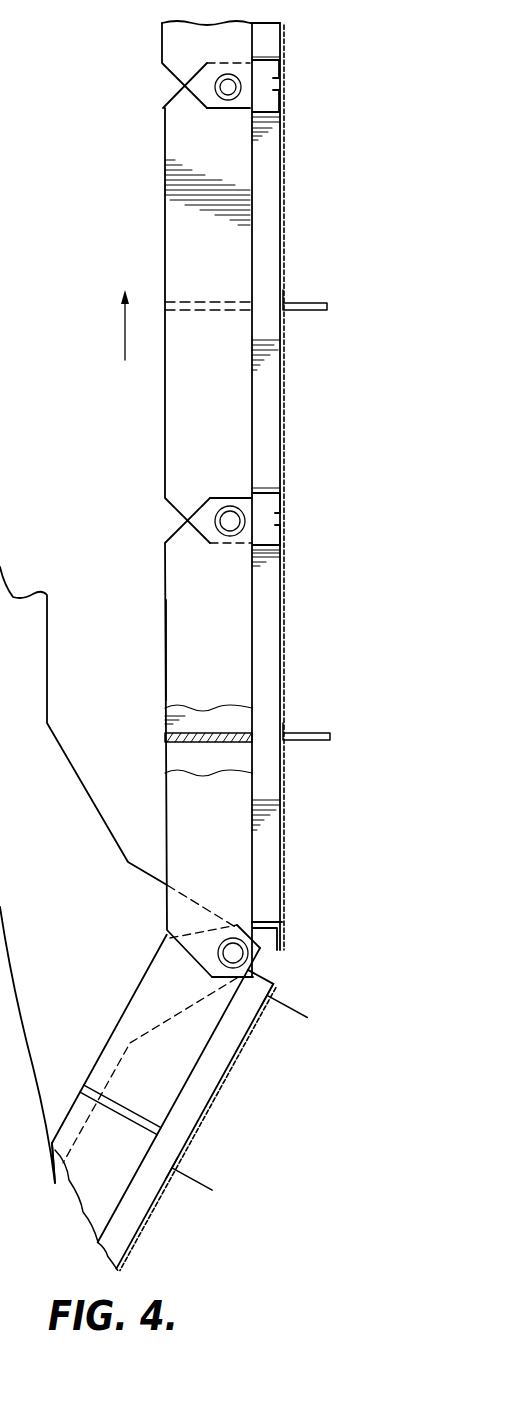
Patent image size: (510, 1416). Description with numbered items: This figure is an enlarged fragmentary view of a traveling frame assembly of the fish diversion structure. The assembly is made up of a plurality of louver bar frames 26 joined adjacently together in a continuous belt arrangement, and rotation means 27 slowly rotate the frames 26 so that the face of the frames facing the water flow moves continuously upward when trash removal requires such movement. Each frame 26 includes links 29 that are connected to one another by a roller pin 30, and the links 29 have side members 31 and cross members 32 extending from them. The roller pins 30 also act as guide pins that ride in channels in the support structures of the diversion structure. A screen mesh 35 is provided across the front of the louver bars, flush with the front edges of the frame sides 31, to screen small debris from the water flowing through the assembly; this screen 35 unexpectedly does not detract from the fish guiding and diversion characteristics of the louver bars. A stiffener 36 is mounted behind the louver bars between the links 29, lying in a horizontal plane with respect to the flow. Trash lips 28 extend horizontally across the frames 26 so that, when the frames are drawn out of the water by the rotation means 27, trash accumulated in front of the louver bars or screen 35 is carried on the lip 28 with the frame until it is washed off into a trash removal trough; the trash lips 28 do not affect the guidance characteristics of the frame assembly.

The louver bar frame 26 is at (160, 404).
The rotation means 27 is at (118, 875).
The trash lip 28 is at (307, 733).
The link 29 is at (176, 641).
The roller pin 30 is at (231, 506).
The side member 31 is at (272, 590).
The cross member 32 is at (283, 528).
The screen mesh 35 is at (283, 353).
The stiffener 36 is at (212, 300).